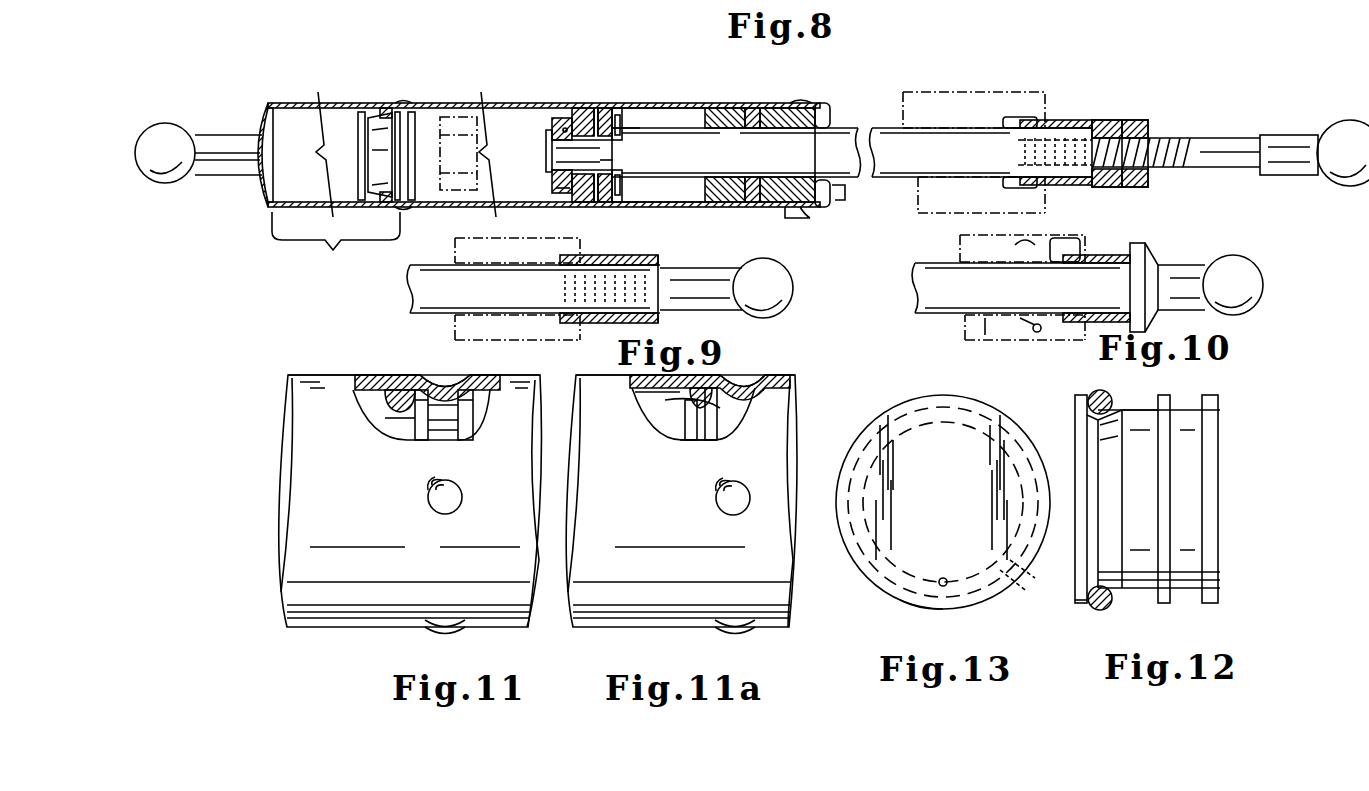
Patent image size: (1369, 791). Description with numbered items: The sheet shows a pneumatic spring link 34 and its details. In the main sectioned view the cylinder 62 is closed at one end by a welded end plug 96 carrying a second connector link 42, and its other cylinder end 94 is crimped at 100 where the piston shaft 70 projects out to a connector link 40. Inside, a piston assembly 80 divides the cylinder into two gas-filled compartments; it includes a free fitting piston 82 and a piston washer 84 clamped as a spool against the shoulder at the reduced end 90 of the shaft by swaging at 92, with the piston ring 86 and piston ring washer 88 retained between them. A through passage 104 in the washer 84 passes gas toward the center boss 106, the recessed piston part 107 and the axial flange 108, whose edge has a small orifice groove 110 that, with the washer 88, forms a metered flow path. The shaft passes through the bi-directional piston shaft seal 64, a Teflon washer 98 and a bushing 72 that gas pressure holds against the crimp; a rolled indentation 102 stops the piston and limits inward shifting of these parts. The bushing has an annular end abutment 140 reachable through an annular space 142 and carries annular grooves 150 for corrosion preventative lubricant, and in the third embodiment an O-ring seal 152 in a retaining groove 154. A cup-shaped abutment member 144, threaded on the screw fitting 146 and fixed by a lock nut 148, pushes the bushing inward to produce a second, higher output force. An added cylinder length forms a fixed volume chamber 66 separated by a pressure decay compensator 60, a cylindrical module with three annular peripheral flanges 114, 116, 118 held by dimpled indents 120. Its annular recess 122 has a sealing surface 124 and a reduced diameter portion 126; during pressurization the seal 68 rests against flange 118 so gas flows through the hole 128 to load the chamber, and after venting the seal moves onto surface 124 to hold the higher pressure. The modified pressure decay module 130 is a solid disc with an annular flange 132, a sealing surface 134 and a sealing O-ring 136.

In FIG. 8, the spring link 34 is at (466, 100).
In FIG. 8, the connector link 40 is at (1345, 140).
In FIG. 9, the connector link 40 is at (780, 280).
In FIG. 10, the connector link 40 is at (1238, 265).
In FIG. 8, the second connector link 42 is at (172, 140).
In FIG. 8, the pressure decay compensator 60 is at (370, 140).
In FIG. 11, the pressure decay compensator 60 is at (478, 380).
In FIG. 13, the pressure decay compensator 60 is at (1000, 404).
In FIG. 12, the pressure decay compensator 60 is at (1222, 425).
In FIG. 8, the cylinder 62 is at (690, 103).
In FIG. 11, the cylinder 62 is at (372, 376).
In FIG. 11A, the cylinder 62 is at (785, 378).
In FIG. 8, the piston shaft seal 64 is at (725, 107).
In FIG. 8, the fixed volume chamber 66 is at (544, 182).
In FIG. 11, the fixed volume chamber 66 is at (290, 435).
In FIG. 11A, the fixed volume chamber 66 is at (650, 408).
In FIG. 8, the seal 68 is at (385, 107).
In FIG. 11, the seal 68 is at (398, 388).
In FIG. 12, the seal 68 is at (1088, 398).
In FIG. 8, the piston shaft 70 is at (860, 132).
In FIG. 9, the piston shaft 70 is at (418, 268).
In FIG. 10, the piston shaft 70 is at (925, 265).
In FIG. 8, the bushing 72 is at (787, 107).
In FIG. 10, the bushing 72 is at (985, 328).
In FIG. 8, the piston assembly 80 is at (552, 120).
In FIG. 8, the piston 82 is at (560, 116).
In FIG. 8, the piston washer 84 is at (608, 107).
In FIG. 8, the piston ring 86 is at (597, 107).
In FIG. 8, the piston ring washer 88 is at (583, 107).
In FIG. 8, the reduced end of shaft 90 is at (560, 148).
In FIG. 8, the swaged end 92 is at (546, 168).
In FIG. 8, the cylinder end 94 is at (808, 103).
In FIG. 8, the end plug 96 is at (262, 125).
In FIG. 8, the Teflon washer 98 is at (752, 107).
In FIG. 8, the crimp 100 is at (828, 118).
In FIG. 8, the rolled indentation 102 is at (616, 204).
In FIG. 8, the through passage 104 is at (622, 131).
In FIG. 8, the center boss 106 is at (600, 160).
In FIG. 8, the piston part 107 is at (560, 130).
In FIG. 8, the flange 108 is at (556, 188).
In FIG. 8, the orifice groove 110 is at (565, 203).
In FIG. 11, the annular peripheral flange 114 is at (470, 420).
In FIG. 12, the annular peripheral flange 114 is at (1209, 606).
In FIG. 11, the annular peripheral flange 116 is at (418, 430).
In FIG. 12, the annular peripheral flange 116 is at (1164, 606).
In FIG. 13, the annular peripheral flange 118 is at (903, 603).
In FIG. 12, the annular peripheral flange 118 is at (1082, 606).
In FIG. 8, the dimpled indents 120 is at (410, 206).
In FIG. 11, the dimpled indents 120 is at (445, 385).
In FIG. 11A, the dimpled indents 120 is at (740, 378).
In FIG. 12, the annular recess 122 is at (1133, 405).
In FIG. 11, the sealing surface 124 is at (385, 418).
In FIG. 13, the sealing surface 124 is at (1018, 553).
In FIG. 12, the sealing surface 124 is at (1148, 410).
In FIG. 13, the reduced diameter portion 126 is at (1010, 574).
In FIG. 12, the reduced diameter portion 126 is at (1088, 415).
In FIG. 13, the hole 128 is at (948, 586).
In FIG. 12, the hole 128 is at (1075, 606).
In FIG. 11A, the pressure decay module 130 is at (715, 432).
In FIG. 11A, the annular flange 132 is at (722, 410).
In FIG. 11A, the annular cylindrical sealing surface 134 is at (690, 410).
In FIG. 11A, the sealing O-ring 136 is at (640, 393).
In FIG. 8, the annular end abutment 140 is at (832, 187).
In FIG. 10, the annular end abutment 140 is at (1062, 245).
In FIG. 8, the annular space 142 is at (1072, 103).
In FIG. 8, the abutment member 144 is at (1102, 119).
In FIG. 9, the abutment member 144 is at (600, 250).
In FIG. 8, the screw fitting 146 is at (1188, 138).
In FIG. 10, the screw fitting 146 is at (1110, 252).
In FIG. 8, the lock nut 148 is at (1140, 119).
In FIG. 10, the lock nut 148 is at (1165, 232).
In FIG. 8, the annular grooves 150 is at (805, 220).
In FIG. 10, the annular grooves 150 is at (1020, 250).
In FIG. 10, the O-ring seal 152 is at (1040, 333).
In FIG. 10, the retaining groove 154 is at (1030, 330).